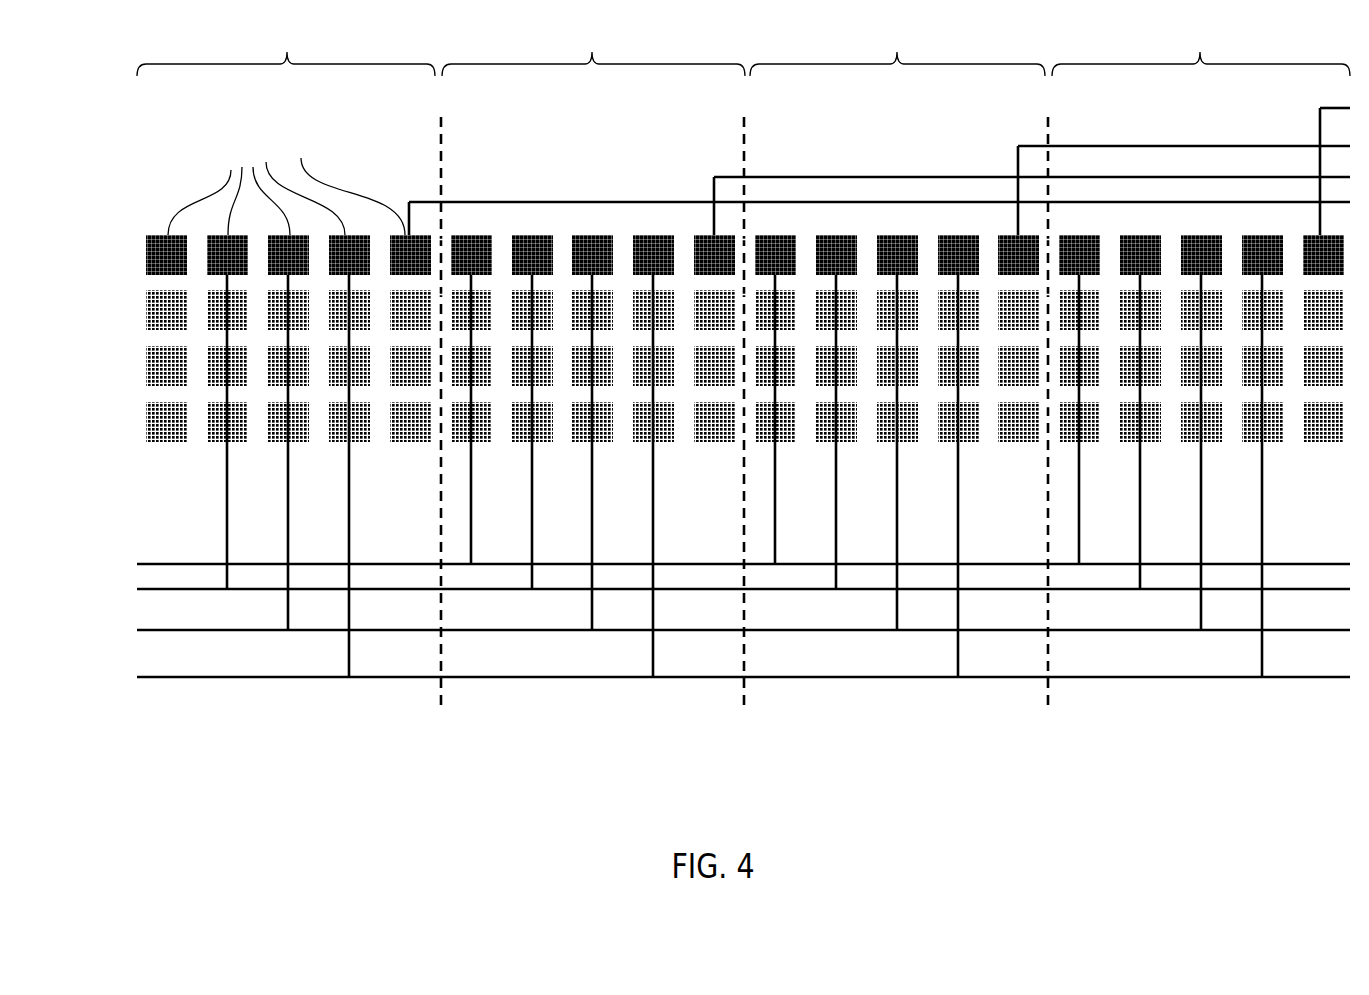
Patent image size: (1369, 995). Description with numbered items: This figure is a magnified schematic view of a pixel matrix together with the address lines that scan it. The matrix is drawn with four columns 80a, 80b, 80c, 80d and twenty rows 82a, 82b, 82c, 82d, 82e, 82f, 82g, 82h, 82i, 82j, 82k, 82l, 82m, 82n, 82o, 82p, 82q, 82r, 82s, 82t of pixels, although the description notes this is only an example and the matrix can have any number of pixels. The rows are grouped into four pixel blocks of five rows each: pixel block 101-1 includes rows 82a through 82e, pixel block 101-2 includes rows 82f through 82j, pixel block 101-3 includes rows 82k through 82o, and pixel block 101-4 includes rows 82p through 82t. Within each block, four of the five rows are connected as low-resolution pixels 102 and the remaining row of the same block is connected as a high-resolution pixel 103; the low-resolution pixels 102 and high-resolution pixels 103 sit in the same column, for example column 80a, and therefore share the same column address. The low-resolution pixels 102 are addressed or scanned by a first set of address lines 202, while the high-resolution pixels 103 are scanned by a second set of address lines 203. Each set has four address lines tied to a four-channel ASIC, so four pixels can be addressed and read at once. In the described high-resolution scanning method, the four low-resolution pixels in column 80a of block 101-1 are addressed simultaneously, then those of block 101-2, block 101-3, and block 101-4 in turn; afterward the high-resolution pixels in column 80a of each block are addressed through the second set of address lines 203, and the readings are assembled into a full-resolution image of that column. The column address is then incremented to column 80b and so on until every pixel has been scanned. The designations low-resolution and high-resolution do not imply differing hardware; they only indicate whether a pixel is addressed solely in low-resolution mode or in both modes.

The pixel block 101-1 is at (286, 47).
The pixel block 101-2 is at (593, 47).
The pixel block 101-3 is at (897, 47).
The pixel block 101-4 is at (1201, 47).
The low-resolution pixels 102 is at (256, 186).
The high-resolution pixels 103 is at (345, 181).
The first set of address lines 202 is at (227, 700).
The second set of address lines 203 is at (1292, 129).
The column 80a is at (142, 249).
The column 80b is at (142, 306).
The column 80c is at (142, 366).
The column 80d is at (142, 420).
The row 82a is at (145, 451).
The row 82b is at (212, 451).
The row 82c is at (273, 451).
The row 82d is at (333, 451).
The row 82e is at (405, 451).
The row 82f is at (458, 454).
The row 82g is at (520, 451).
The row 82h is at (580, 451).
The row 82i is at (640, 451).
The row 82j is at (702, 451).
The row 82k is at (765, 454).
The row 82l is at (828, 451).
The row 82m is at (880, 451).
The row 82n is at (942, 451).
The row 82o is at (1005, 451).
The row 82p is at (1066, 454).
The row 82q is at (1130, 451).
The row 82r is at (1185, 451).
The row 82s is at (1245, 451).
The row 82t is at (1318, 451).